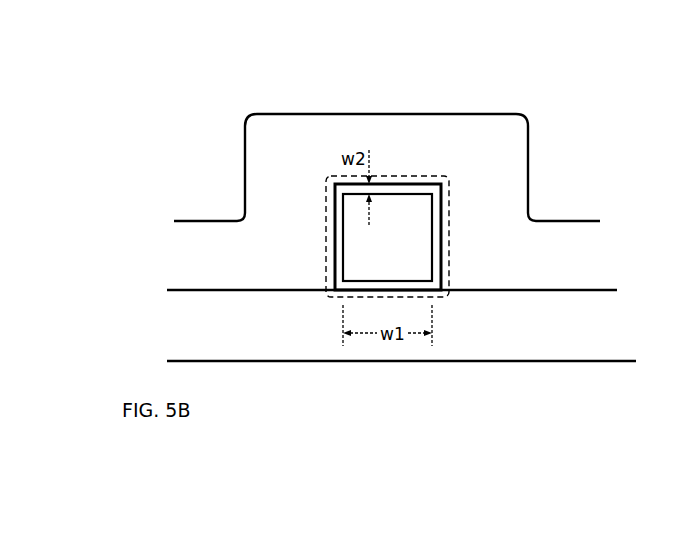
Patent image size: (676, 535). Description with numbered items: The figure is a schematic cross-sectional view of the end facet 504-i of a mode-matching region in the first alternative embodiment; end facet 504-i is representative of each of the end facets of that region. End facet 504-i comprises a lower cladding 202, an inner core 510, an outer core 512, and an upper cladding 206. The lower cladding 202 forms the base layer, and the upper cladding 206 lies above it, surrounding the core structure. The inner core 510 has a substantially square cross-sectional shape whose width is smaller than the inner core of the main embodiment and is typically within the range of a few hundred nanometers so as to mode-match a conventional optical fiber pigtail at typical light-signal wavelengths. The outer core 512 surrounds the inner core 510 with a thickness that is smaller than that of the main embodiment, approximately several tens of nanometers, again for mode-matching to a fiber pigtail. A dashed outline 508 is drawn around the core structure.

The lower cladding 202 is at (238, 343).
The upper cladding 206 is at (238, 273).
The end facet 504-i is at (198, 83).
The gate region outline 508 is at (413, 177).
The inner core 510 is at (388, 266).
The outer core 512 is at (437, 273).